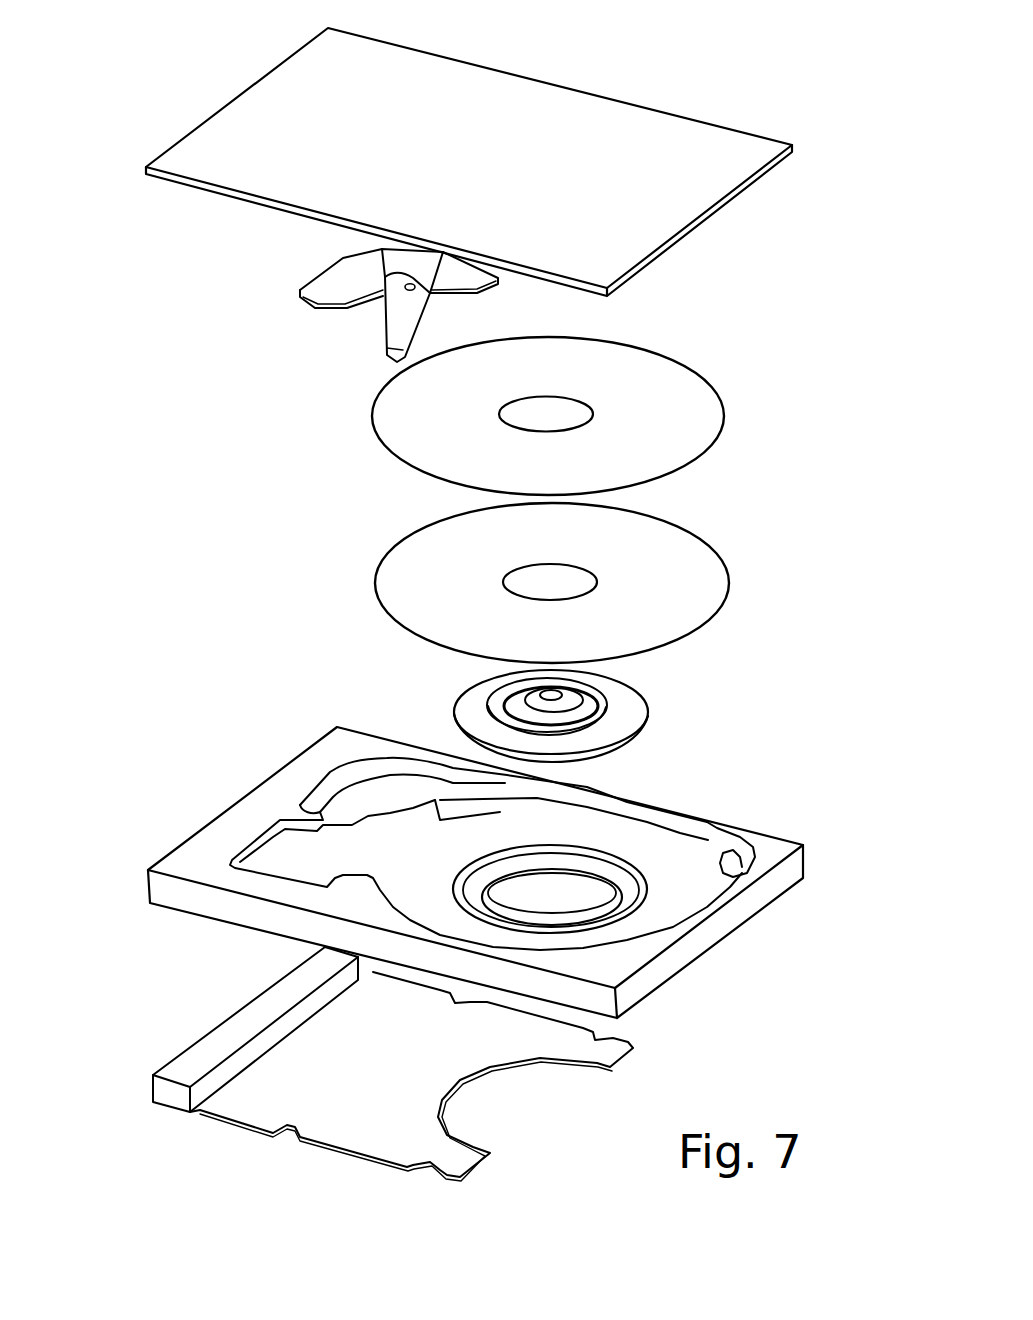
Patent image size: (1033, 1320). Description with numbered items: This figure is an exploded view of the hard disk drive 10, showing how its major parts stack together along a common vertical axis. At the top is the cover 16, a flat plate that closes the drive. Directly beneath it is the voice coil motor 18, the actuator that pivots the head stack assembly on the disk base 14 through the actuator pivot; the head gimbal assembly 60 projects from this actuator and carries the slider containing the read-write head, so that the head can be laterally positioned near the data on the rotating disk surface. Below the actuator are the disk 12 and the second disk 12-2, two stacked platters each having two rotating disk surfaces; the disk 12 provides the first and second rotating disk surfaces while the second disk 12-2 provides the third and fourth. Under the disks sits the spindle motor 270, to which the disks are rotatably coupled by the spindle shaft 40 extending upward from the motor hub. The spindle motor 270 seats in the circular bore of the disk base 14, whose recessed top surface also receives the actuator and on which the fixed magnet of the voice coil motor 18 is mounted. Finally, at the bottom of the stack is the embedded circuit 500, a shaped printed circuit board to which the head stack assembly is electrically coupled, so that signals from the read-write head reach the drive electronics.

The hard disk drive 10 is at (98, 30).
The cover 16 is at (710, 214).
The voice coil motor 18 is at (355, 326).
The head gimbal assembly 60 is at (375, 338).
The disk 12 is at (708, 452).
The second disk 12-2 is at (727, 593).
The spindle motor 270 is at (621, 716).
The spindle shaft 40 is at (587, 697).
The disk base 14 is at (727, 937).
The embedded circuit 500 is at (620, 1057).